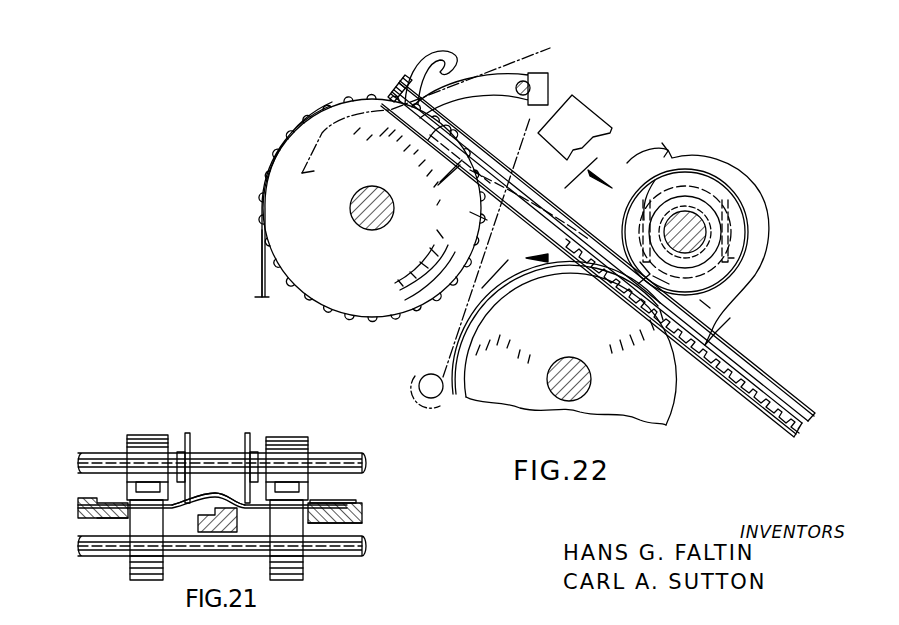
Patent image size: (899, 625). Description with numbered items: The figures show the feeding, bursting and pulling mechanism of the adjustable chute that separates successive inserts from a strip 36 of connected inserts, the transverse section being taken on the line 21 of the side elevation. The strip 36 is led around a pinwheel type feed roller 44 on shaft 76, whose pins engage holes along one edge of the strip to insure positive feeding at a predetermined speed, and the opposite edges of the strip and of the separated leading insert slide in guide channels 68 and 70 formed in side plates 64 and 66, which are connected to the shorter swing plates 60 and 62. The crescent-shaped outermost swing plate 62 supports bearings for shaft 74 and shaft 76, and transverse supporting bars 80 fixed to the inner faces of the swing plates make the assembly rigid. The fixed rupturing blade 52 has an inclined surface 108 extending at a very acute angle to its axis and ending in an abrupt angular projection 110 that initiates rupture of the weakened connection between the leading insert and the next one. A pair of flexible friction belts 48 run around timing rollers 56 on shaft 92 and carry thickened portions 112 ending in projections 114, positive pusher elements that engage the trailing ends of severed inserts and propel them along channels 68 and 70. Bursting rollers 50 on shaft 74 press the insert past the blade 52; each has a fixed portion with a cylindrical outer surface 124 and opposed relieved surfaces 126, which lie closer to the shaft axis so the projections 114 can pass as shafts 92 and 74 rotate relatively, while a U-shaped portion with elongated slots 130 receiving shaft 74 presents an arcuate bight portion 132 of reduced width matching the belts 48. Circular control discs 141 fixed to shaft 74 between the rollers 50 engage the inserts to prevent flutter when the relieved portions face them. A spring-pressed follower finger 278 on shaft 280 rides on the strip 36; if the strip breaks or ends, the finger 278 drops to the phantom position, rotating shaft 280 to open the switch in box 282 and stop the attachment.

In FIG. 22, the section line 21— 21 is at (545, 216).
In FIG. 22, the strip of connected inserts 36 is at (262, 290).
In FIG. 21, the strip of connected inserts 36 is at (120, 504).
In FIG. 22, the pinwheel type feed roller 44 is at (282, 193).
In FIG. 22, the flexible friction belts 48 is at (460, 340).
In FIG. 22, the bursting rollers 50 is at (722, 278).
In FIG. 21, the bursting rollers 50 is at (127, 443).
In FIG. 22, the rupturing blade 52 is at (441, 177).
In FIG. 21, the rupturing blade 52 is at (203, 520).
In FIG. 22, the timing rollers 56 is at (674, 406).
In FIG. 21, the timing rollers 56 is at (148, 582).
In FIG. 22, the swing plate 60 is at (402, 80).
In FIG. 22, the outermost swing plate 62 is at (423, 410).
In FIG. 21, the side plate 64 is at (362, 508).
In FIG. 22, the side plate 66 is at (765, 376).
In FIG. 21, the side plate 66 is at (80, 506).
In FIG. 22, the guide channel 68 is at (467, 210).
In FIG. 21, the guide channel 68 is at (95, 519).
In FIG. 22, the guide channel 70 is at (790, 412).
In FIG. 22, the shaft 74 is at (704, 238).
In FIG. 21, the shaft 74 is at (336, 458).
In FIG. 22, the shaft 76 is at (352, 200).
In FIG. 22, the supporting shafts or bars 80 is at (440, 398).
In FIG. 22, the shaft 92 is at (578, 364).
In FIG. 21, the shaft 92 is at (352, 558).
In FIG. 22, the inclined surface 108 is at (497, 168).
In FIG. 22, the abrupt angular projection 110 is at (505, 182).
In FIG. 21, the abrupt angular projection 110 is at (216, 492).
In FIG. 22, the thickened portions 112 is at (725, 343).
In FIG. 22, the projections 114 is at (669, 275).
In FIG. 22, the outer surface 124 is at (678, 182).
In FIG. 22, the relieved surfaces 126 is at (641, 210).
In FIG. 22, the elongated slots 130 is at (689, 211).
In FIG. 22, the bight portion 132 is at (706, 298).
In FIG. 22, the circular control discs 141 is at (655, 180).
In FIG. 21, the circular control discs 141 is at (186, 433).
In FIG. 22, the spring-pressed follower finger 278 is at (434, 52).
In FIG. 22, the shaft 280 is at (550, 75).
In FIG. 22, the switch box 282 is at (580, 118).